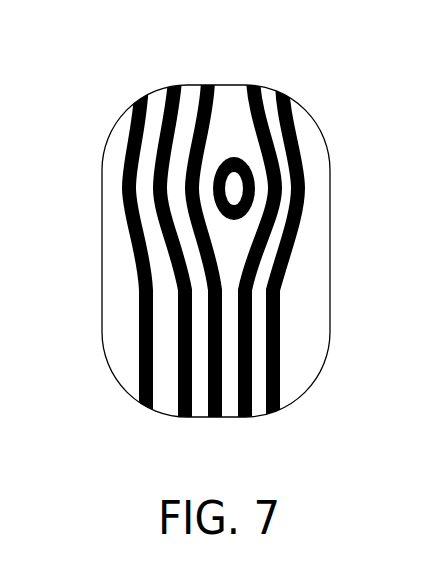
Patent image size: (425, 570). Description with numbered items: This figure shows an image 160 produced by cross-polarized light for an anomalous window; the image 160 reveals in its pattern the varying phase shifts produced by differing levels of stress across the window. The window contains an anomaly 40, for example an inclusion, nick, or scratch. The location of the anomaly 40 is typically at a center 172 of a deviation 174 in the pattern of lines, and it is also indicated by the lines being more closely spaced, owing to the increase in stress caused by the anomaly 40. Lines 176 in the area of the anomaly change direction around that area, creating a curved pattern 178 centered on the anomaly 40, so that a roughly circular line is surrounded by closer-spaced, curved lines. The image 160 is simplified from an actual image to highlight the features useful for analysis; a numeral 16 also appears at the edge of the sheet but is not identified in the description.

The image 160 is at (117, 237).
The curved pattern 178 is at (303, 98).
The anomaly 40 is at (202, 252).
The deviation 174 is at (203, 252).
The lines 176 is at (285, 252).
The center 172 is at (237, 196).
The article 16 is at (417, 298).